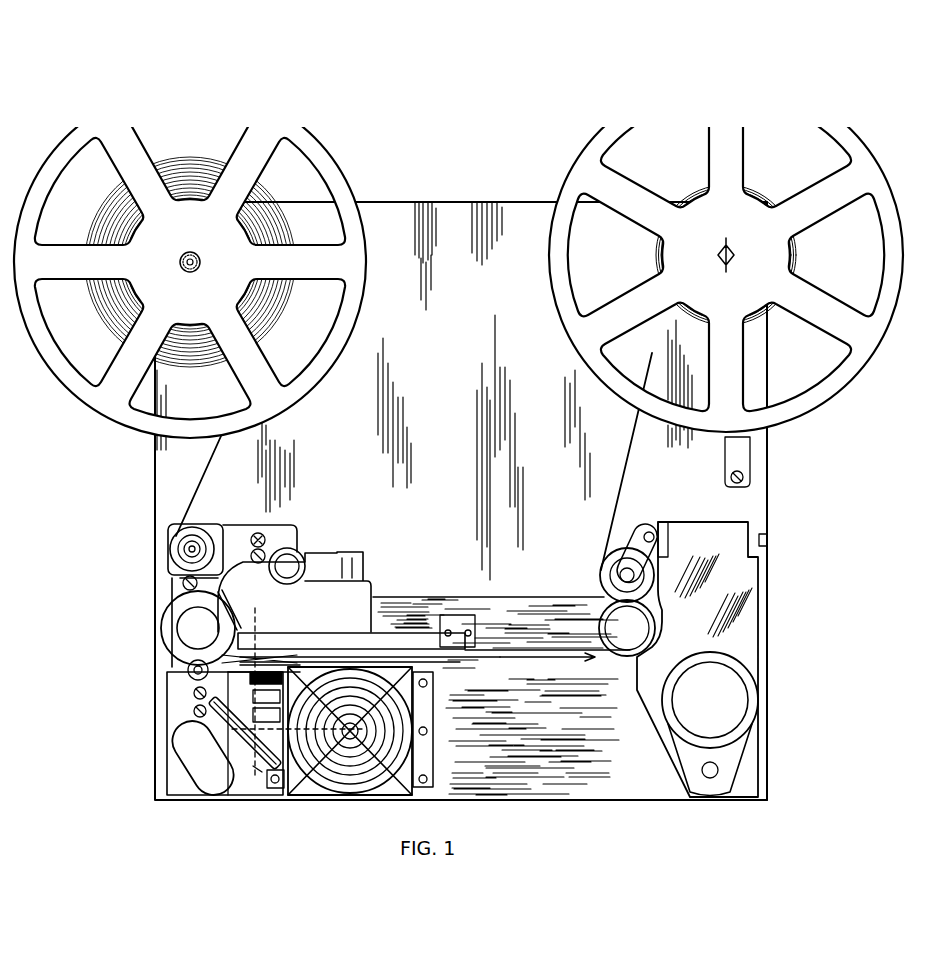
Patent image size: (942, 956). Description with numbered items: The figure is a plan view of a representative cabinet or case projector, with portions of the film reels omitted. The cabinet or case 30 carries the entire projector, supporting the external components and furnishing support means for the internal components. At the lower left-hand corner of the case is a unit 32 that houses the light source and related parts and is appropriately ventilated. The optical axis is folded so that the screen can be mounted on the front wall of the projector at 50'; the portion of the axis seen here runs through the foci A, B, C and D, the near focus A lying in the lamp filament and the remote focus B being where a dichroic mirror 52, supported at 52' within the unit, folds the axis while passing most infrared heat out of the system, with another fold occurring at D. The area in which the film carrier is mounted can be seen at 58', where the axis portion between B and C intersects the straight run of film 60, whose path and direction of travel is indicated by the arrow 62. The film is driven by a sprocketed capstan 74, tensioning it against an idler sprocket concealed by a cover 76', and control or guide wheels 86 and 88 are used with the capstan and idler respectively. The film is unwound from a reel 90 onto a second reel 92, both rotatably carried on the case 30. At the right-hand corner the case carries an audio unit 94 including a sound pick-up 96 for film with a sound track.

The cabinet or case 30 is at (462, 202).
The light source unit 32 is at (390, 627).
The screen position on front wall 50' is at (603, 816).
The mirror 52 is at (224, 737).
The mirror support 52' is at (258, 783).
The film carrier area 58' is at (261, 663).
The film 60 is at (500, 658).
The arrow 62 is at (562, 658).
The sprocketed capstan 74 is at (625, 644).
The cover 76' is at (244, 616).
The control or guide wheel 86 is at (620, 552).
The control or guide wheel 88 is at (205, 533).
The reel 90 is at (367, 297).
The second reel 92 is at (556, 306).
The audio unit 94 is at (752, 602).
The sound pick-up 96 is at (660, 640).
The near focus A is at (360, 731).
The remote focus B is at (250, 759).
The optical axis point C is at (297, 680).
The optical axis fold point D is at (266, 540).